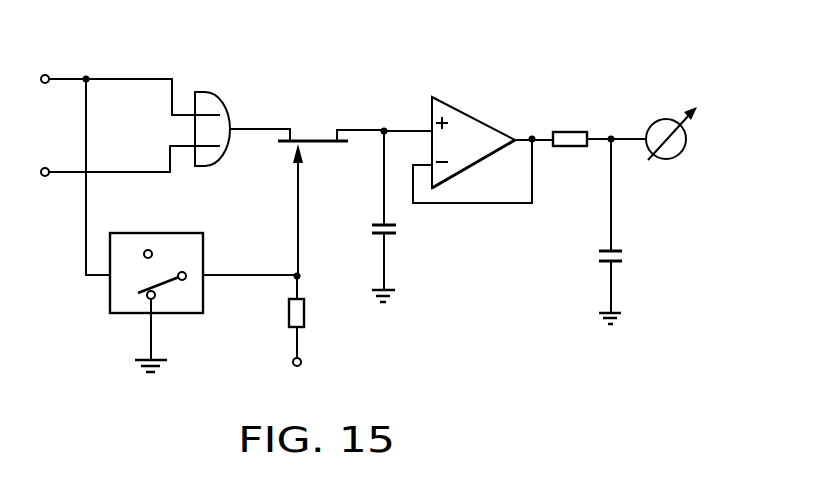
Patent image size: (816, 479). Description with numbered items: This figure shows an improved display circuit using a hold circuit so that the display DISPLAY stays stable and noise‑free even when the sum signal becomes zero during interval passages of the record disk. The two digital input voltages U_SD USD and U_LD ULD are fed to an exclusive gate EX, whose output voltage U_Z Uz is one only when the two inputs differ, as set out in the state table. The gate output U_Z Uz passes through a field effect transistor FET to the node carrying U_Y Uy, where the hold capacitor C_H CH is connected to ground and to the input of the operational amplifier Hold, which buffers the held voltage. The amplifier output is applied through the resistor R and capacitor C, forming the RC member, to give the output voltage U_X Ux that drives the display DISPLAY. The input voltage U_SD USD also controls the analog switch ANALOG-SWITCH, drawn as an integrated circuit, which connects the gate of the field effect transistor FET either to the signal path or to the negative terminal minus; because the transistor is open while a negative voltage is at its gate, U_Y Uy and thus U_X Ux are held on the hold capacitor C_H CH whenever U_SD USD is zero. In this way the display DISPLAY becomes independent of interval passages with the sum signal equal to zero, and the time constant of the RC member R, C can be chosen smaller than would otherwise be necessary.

The U_SD input voltage USD is at (129, 158).
The U_LD input voltage ULD is at (128, 179).
The exclusive gate EX is at (238, 109).
The field effect transistor FET is at (331, 165).
The U_Z gate output voltage Uz is at (270, 109).
The U_Y held voltage Uy is at (400, 113).
The hold operational amplifier Hold is at (483, 127).
The resistor of the RC member R is at (575, 127).
The U_X output voltage Ux is at (621, 114).
The display DISPLAY is at (673, 150).
The capacitor of the RC member C is at (622, 250).
The hold capacitor CH is at (398, 231).
The analog switch ANALOG-SWITCH is at (169, 323).
The (−) voltage terminal minus is at (314, 324).